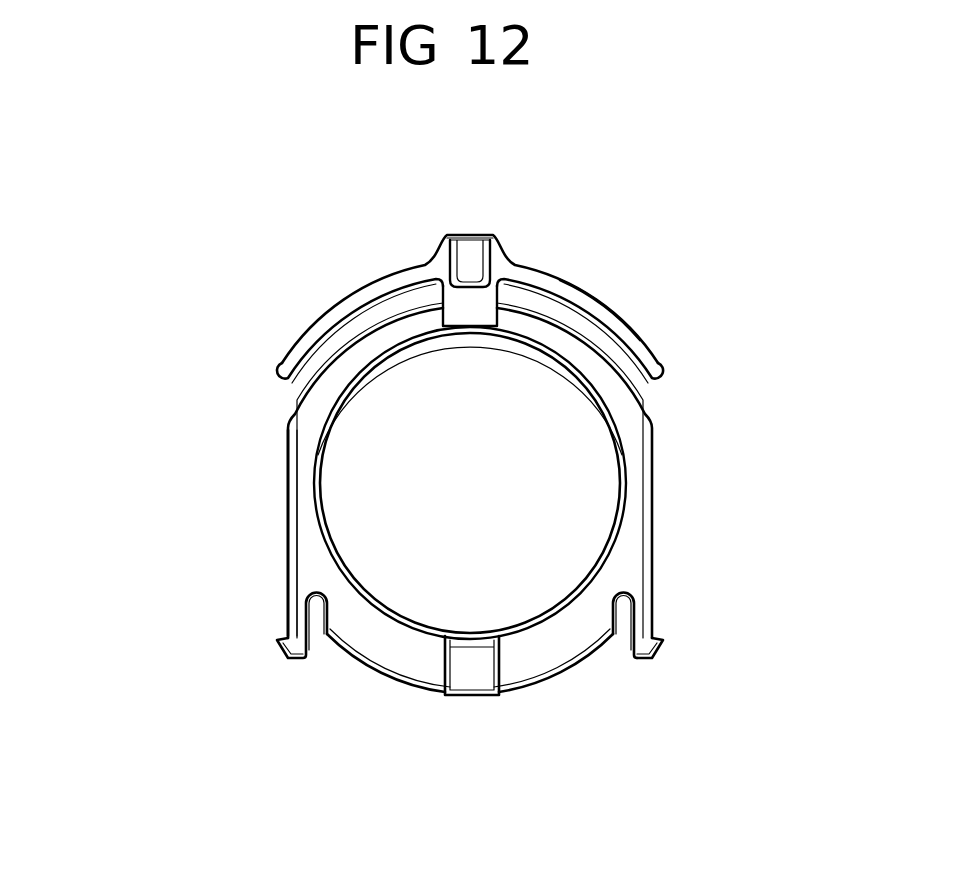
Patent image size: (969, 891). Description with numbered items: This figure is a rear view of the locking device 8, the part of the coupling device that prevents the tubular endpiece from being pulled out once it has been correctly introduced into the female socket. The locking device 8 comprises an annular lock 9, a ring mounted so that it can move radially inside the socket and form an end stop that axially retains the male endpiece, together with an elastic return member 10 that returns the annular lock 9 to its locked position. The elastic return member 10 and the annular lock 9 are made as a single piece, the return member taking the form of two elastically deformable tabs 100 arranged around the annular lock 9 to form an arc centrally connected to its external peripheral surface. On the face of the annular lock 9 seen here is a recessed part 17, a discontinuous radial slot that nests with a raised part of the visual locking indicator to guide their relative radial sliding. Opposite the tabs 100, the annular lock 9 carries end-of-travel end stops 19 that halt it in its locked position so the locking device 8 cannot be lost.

The locking device 8 is at (697, 458).
The annular lock 9 is at (300, 510).
The elastic return member 10 is at (540, 267).
The elastically deformable tabs 100 is at (620, 313).
The recessed part 17 is at (470, 660).
The end-of-travel end stop 19 is at (657, 652).